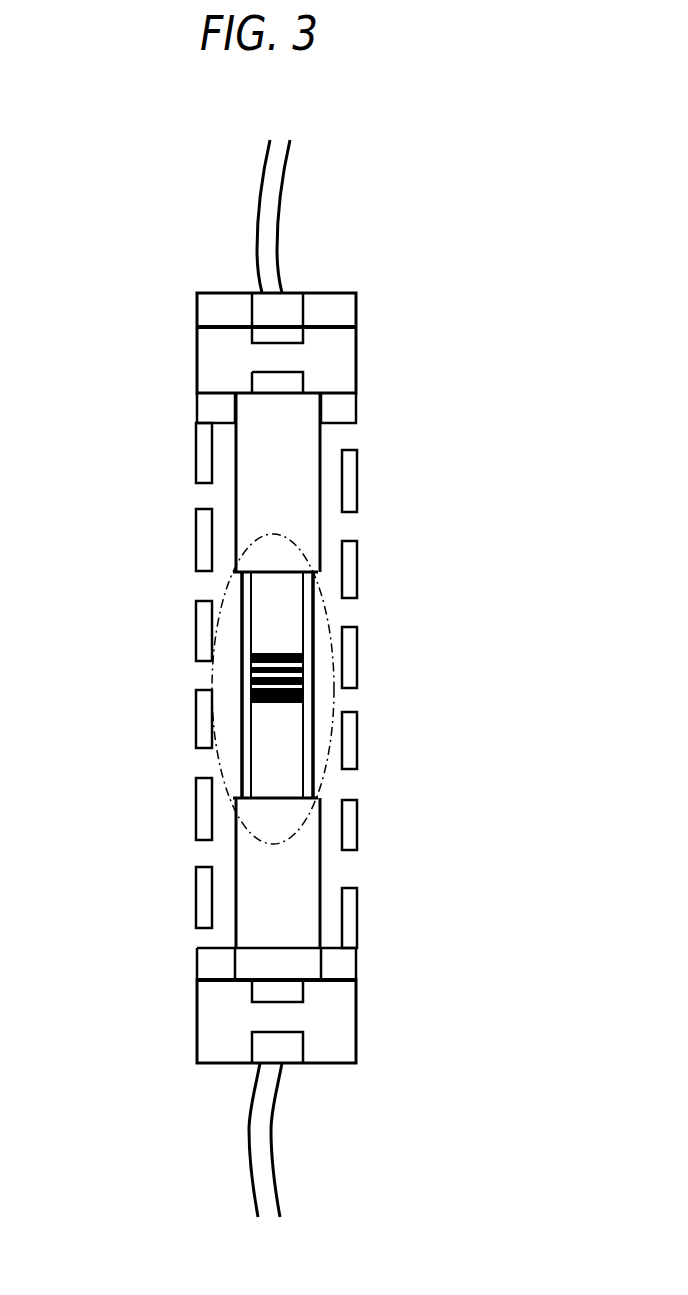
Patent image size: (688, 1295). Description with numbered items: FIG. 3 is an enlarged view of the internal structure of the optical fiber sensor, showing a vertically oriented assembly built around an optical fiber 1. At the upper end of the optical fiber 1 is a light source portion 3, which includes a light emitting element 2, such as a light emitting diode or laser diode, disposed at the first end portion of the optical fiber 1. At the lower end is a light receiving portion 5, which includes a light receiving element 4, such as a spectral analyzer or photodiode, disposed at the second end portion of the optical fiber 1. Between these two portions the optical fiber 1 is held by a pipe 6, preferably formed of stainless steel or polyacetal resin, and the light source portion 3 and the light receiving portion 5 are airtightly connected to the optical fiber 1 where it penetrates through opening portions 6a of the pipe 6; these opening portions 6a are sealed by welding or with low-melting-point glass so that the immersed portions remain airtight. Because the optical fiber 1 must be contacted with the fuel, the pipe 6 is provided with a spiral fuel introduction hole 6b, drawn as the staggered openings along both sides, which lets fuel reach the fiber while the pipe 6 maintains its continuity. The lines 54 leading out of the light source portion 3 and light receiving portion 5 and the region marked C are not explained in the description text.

The optical fiber 1 is at (283, 917).
The light emitting element 2 is at (287, 332).
The light source portion 3 is at (197, 357).
The light receiving element 4 is at (280, 1048).
The light receiving portion 5 is at (197, 1028).
The pipe 6 is at (343, 571).
The opening portions 6a is at (258, 407).
The fuel introduction hole 6b is at (342, 613).
The cable 54 is at (262, 265).
The coupling region C is at (200, 673).